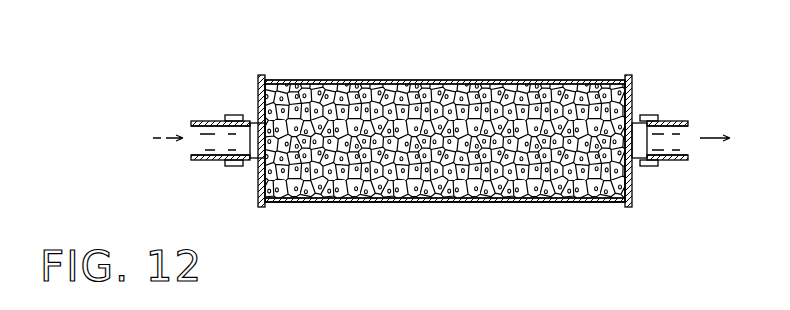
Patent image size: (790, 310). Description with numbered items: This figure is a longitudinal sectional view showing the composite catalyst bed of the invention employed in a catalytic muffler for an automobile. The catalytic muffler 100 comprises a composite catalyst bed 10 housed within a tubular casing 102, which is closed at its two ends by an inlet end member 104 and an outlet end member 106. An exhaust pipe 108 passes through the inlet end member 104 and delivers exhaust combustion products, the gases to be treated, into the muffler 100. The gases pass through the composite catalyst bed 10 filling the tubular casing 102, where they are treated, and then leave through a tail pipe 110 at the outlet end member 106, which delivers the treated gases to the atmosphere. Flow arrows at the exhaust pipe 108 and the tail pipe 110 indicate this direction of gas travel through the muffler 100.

The catalytic muffler 100 is at (440, 62).
The tubular casing 102 is at (380, 82).
The inlet end member 104 is at (258, 102).
The outlet end member 106 is at (632, 94).
The exhaust pipe 108 is at (210, 122).
The tail pipe 110 is at (677, 122).
The composite catalyst bed 10 is at (375, 202).